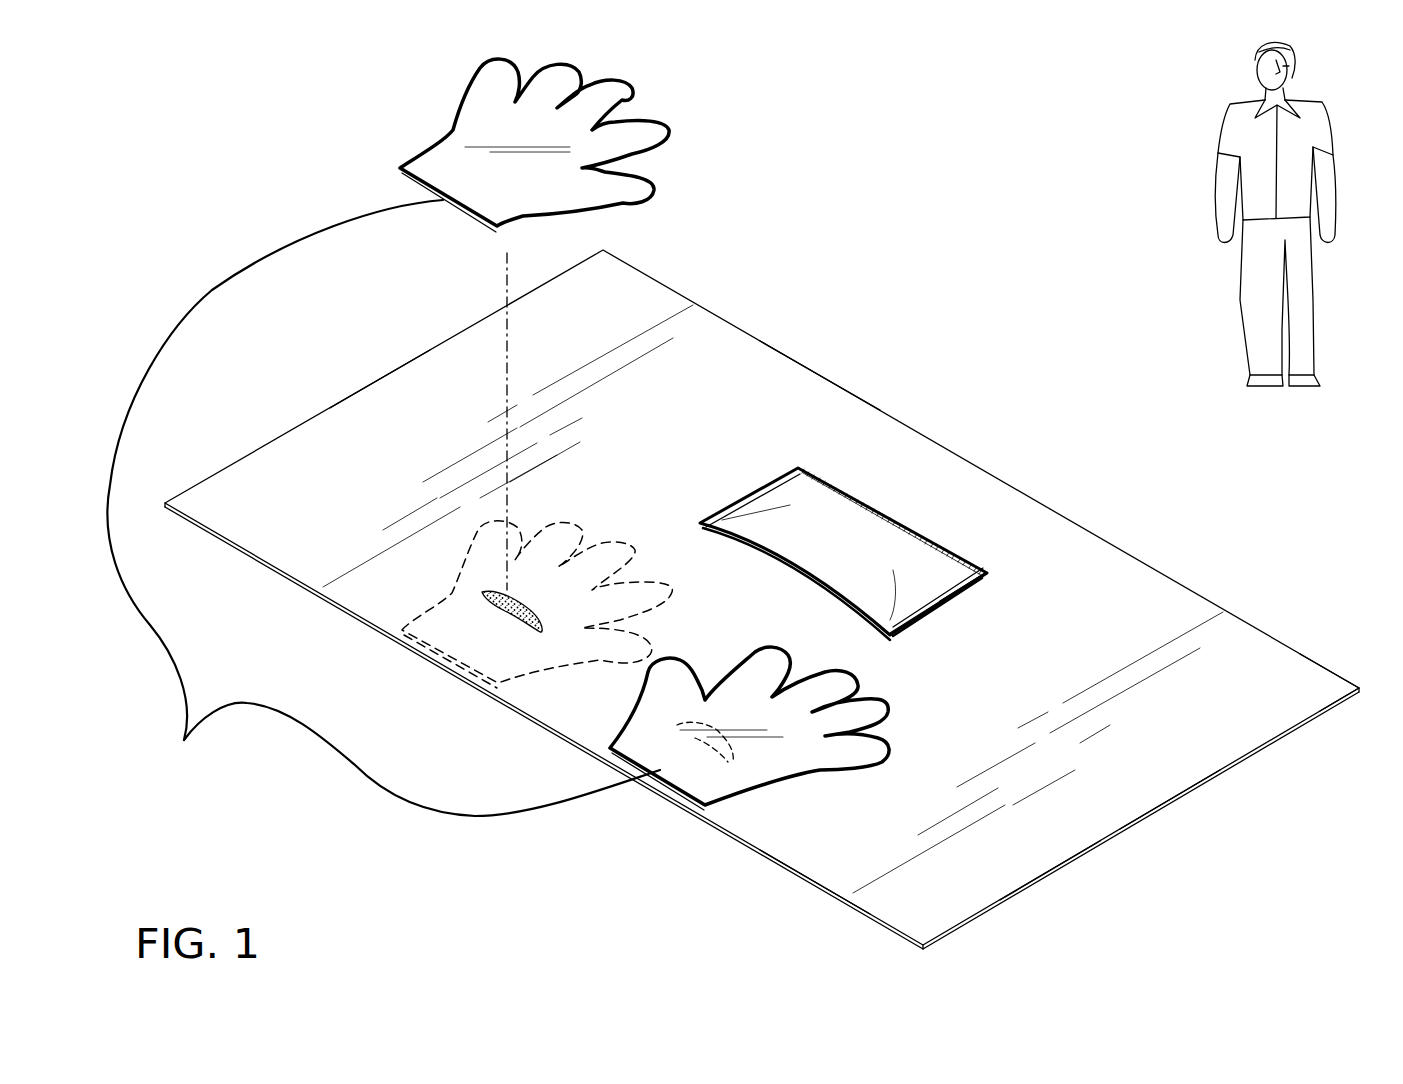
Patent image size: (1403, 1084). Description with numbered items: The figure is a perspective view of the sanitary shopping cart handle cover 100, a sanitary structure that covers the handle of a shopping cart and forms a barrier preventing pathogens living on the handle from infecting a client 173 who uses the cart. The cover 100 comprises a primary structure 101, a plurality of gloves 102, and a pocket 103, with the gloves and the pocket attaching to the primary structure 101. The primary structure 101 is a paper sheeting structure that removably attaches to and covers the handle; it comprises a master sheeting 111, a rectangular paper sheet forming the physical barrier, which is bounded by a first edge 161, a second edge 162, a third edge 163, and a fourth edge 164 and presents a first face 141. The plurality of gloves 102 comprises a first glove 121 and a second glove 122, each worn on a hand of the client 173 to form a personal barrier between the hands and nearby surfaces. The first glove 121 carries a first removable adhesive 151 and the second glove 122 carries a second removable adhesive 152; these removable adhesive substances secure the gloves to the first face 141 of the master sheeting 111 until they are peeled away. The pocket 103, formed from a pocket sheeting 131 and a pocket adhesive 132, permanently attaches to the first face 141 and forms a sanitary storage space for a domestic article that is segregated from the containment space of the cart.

The sanitary shopping cart handle cover 100 is at (220, 197).
The primary structure 101 is at (1250, 605).
The plurality of gloves 102 is at (383, 508).
The pocket 103 is at (897, 517).
The master sheeting 111 is at (1330, 667).
The first glove 121 is at (603, 102).
The second glove 122 is at (753, 735).
The pocket sheeting 131 is at (935, 568).
The pocket adhesive 132 is at (953, 613).
The first face 141 is at (1063, 833).
The first removable adhesive 151 is at (507, 613).
The second removable adhesive 152 is at (712, 748).
The first edge 161 is at (820, 375).
The second edge 162 is at (378, 379).
The third edge 163 is at (812, 883).
The fourth edge 164 is at (1170, 800).
The client 173 is at (1227, 118).